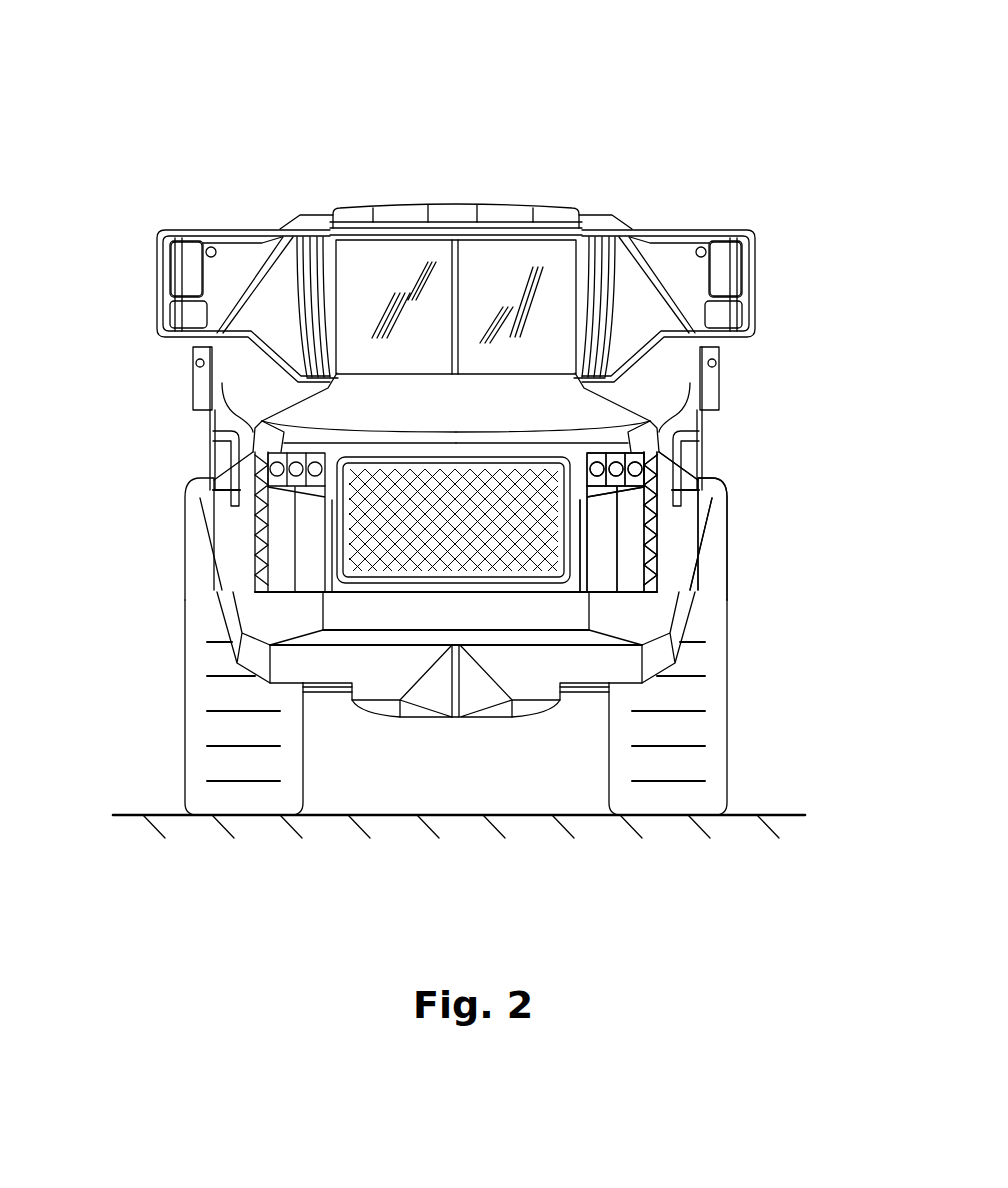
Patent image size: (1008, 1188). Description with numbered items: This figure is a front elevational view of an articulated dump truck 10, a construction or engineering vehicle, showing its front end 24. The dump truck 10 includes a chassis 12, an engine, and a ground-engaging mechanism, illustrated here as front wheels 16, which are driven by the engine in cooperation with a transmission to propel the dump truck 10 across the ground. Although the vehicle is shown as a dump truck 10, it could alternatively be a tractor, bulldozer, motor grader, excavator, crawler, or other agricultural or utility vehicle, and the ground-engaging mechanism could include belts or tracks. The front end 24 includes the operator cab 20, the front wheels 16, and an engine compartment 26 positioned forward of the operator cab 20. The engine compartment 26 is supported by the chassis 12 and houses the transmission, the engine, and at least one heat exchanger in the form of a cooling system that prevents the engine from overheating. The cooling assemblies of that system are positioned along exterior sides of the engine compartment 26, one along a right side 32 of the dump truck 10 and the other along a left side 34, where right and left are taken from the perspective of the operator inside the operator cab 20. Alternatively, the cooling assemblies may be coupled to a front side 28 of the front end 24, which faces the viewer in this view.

The articulated dump truck 10 is at (680, 115).
The chassis 12 is at (400, 717).
The front wheels 16 is at (207, 733).
The operator cab 20 is at (455, 210).
The front end 24 is at (750, 511).
The engine compartment 26 is at (578, 522).
The front side 28 is at (340, 525).
The right side 32 is at (176, 452).
The left side 34 is at (778, 440).